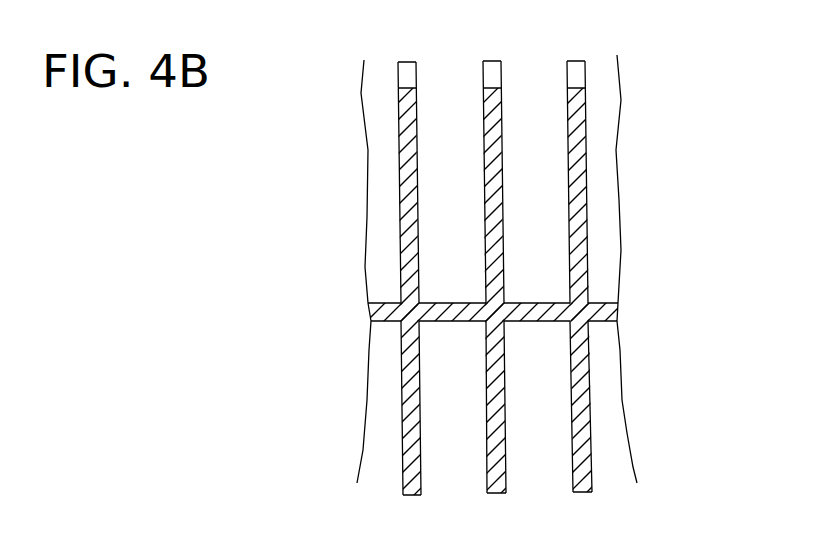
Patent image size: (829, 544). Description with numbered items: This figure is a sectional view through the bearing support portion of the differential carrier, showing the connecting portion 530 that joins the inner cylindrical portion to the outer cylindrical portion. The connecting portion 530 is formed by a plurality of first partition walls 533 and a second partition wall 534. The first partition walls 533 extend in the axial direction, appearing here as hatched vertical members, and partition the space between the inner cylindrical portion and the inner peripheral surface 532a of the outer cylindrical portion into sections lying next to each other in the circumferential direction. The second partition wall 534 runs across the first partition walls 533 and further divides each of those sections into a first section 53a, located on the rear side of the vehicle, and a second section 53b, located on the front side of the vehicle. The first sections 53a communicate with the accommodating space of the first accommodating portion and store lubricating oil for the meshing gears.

The connecting portion 530 is at (414, 280).
The first partition walls 533 is at (580, 252).
The second partition wall 534 is at (540, 312).
The inner peripheral surface 532a is at (380, 240).
The first section 53a is at (444, 88).
The second section 53b is at (453, 467).